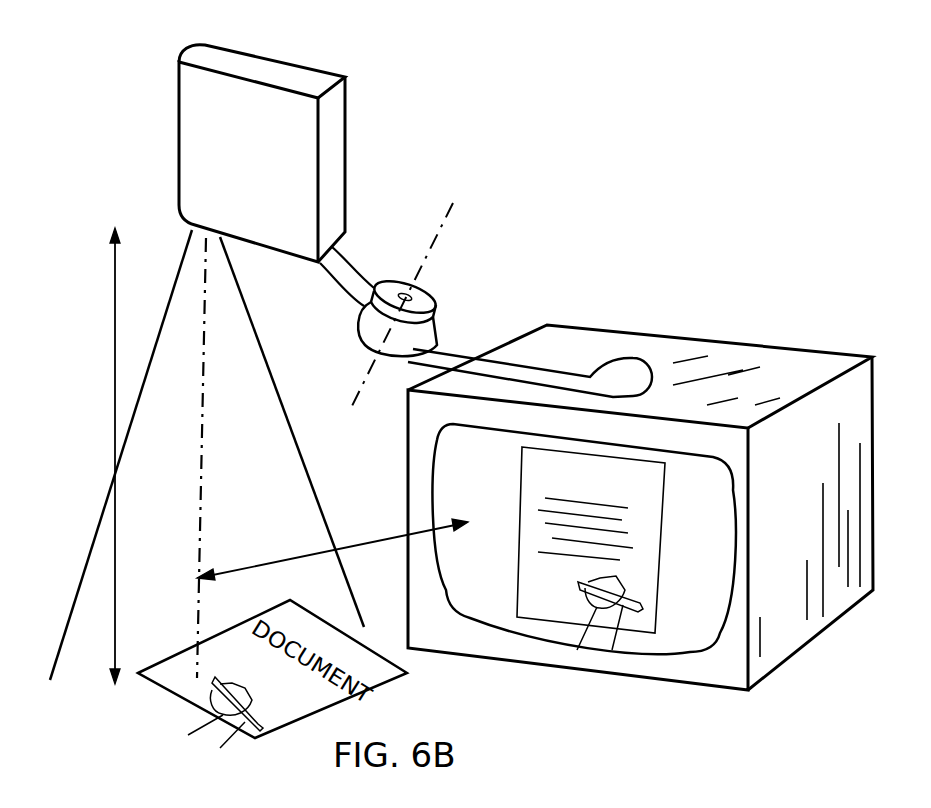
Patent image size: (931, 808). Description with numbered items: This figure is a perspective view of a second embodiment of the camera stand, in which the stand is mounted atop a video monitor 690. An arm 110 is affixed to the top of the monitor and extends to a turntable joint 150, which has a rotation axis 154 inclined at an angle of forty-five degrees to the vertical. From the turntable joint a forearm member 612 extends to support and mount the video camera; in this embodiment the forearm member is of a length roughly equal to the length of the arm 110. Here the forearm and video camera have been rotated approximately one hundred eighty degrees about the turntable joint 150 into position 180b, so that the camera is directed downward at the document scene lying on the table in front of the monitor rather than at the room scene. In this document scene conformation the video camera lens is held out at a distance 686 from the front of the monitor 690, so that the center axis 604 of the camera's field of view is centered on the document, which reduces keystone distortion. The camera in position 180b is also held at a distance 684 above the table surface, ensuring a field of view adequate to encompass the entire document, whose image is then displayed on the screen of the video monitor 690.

The video camera position 180b is at (287, 176).
The forearm member 612 is at (362, 253).
The turntable joint 150 is at (431, 313).
The rotation axis 154 is at (429, 295).
The arm 110 is at (530, 370).
The video monitor 690 is at (815, 531).
The distance from front of monitor 686 is at (332, 541).
The distance above table surface 684 is at (80, 456).
The center axis of field of view 604 is at (228, 458).